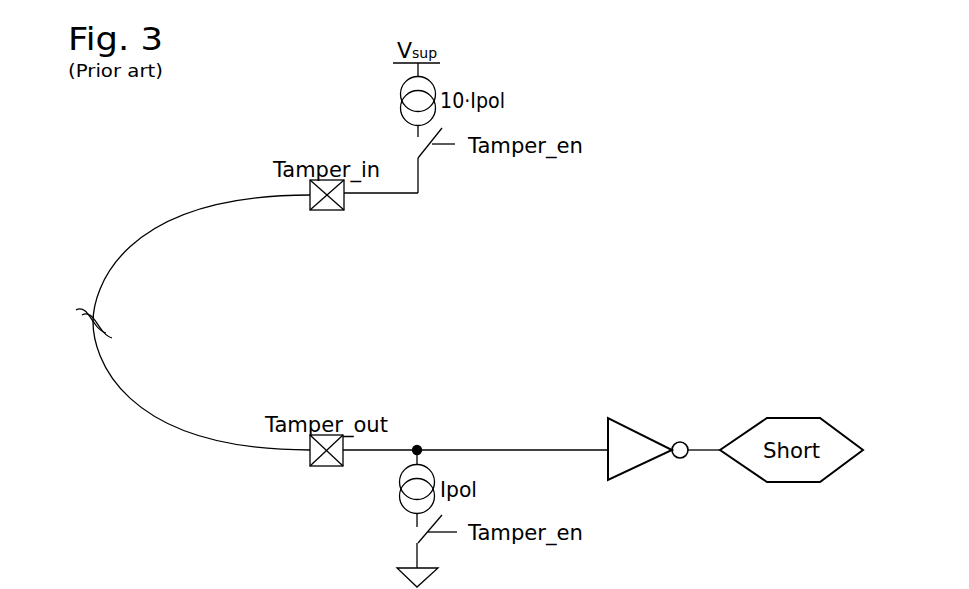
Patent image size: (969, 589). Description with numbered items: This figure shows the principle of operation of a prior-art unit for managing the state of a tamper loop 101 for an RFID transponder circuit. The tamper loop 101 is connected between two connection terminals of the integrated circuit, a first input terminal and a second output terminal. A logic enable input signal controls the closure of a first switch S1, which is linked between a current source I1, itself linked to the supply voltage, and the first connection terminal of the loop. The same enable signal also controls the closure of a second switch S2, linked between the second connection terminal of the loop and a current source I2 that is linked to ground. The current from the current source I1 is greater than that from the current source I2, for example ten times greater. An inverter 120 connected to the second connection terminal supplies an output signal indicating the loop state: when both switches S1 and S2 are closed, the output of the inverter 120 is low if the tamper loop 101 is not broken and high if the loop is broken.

The tamper loop 101 is at (103, 287).
The inverter 120 is at (641, 442).
The first switch S1 is at (420, 160).
The second switch S2 is at (415, 545).
The current source I1 is at (401, 107).
The current source I2 is at (401, 488).